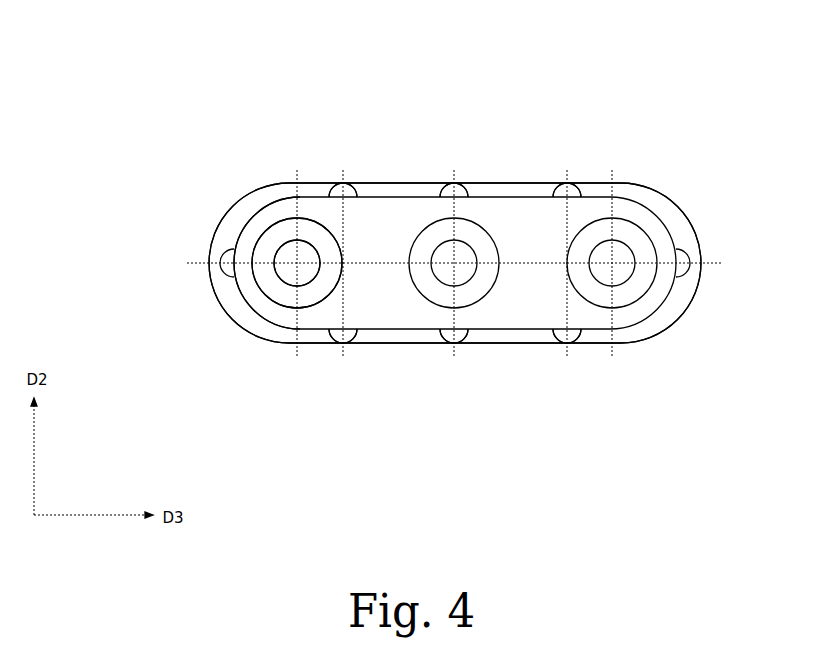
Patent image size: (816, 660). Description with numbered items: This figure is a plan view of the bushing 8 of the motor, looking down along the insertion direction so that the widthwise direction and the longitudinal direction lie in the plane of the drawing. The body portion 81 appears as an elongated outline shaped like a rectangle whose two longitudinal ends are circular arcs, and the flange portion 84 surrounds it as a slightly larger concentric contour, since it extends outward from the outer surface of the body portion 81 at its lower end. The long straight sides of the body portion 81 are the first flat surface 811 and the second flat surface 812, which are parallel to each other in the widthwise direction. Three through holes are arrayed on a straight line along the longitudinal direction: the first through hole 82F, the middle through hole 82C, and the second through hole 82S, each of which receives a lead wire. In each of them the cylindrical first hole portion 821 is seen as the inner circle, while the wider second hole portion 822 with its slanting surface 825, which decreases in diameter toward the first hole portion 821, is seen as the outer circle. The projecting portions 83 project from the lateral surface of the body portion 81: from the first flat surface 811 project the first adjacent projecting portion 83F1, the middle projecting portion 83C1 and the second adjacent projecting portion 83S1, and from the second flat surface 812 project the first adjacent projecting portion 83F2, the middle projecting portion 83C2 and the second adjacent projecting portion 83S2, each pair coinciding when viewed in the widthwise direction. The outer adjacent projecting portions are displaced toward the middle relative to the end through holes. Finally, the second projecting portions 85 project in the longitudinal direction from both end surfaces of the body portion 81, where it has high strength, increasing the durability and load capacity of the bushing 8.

The bushing 8 is at (677, 143).
The body portion 81 is at (518, 210).
The first flat surface 811 is at (588, 343).
The second flat surface 812 is at (312, 183).
The first through hole 82F is at (280, 228).
The middle through hole 82C is at (428, 212).
The second through hole 82S is at (640, 243).
The first hole portion 821 is at (277, 250).
The second hole portion 822 is at (243, 252).
The slanting surface 825 is at (250, 302).
The projecting portions 83 is at (455, 263).
The first adjacent projecting portion 83F1 is at (335, 343).
The first adjacent projecting portion 83F2 is at (343, 183).
The middle projecting portion 83C1 is at (442, 343).
The middle projecting portion 83C2 is at (460, 183).
The second adjacent projecting portion 83S1 is at (557, 343).
The second adjacent projecting portion 83S2 is at (573, 183).
The flange portion 84 is at (672, 318).
The second projecting portions 85 is at (224, 264).